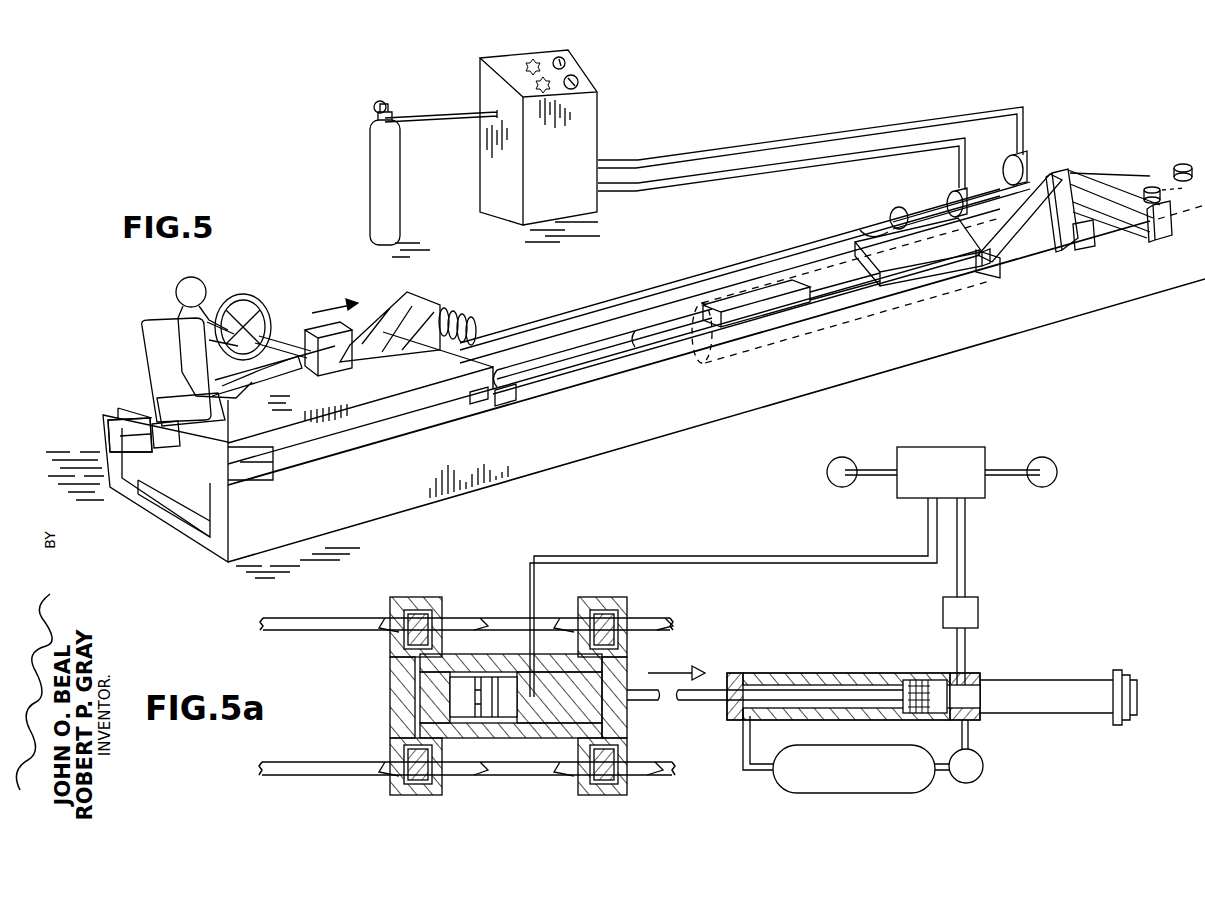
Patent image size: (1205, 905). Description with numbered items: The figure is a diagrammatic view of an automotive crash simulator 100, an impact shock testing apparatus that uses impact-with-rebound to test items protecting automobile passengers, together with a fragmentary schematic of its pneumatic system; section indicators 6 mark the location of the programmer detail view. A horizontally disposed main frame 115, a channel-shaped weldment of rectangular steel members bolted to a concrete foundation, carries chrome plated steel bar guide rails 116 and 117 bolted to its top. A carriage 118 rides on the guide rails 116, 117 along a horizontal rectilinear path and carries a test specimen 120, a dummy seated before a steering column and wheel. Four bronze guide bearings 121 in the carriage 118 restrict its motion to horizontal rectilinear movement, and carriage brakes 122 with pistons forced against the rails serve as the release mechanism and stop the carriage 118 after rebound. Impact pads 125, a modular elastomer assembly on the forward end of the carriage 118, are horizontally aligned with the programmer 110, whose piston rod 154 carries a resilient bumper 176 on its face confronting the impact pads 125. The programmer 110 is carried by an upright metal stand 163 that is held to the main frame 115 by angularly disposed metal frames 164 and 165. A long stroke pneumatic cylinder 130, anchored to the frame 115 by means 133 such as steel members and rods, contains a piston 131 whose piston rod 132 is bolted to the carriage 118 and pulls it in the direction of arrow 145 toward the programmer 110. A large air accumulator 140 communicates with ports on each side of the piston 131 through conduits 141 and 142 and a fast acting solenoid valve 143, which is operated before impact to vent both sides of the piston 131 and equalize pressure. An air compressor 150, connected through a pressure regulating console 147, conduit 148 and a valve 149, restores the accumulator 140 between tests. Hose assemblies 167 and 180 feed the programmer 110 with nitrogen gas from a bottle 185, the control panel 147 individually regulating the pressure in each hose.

In FIG. 5, the end plate / section line 6 is at (878, 220).
In FIG. 5, the automotive crash simulator 100 is at (1060, 325).
In FIG. 5, the programmer 110 is at (922, 252).
In FIG. 5, the main frame 115 is at (250, 520).
In FIG. 5A, the main frame 115 is at (1134, 686).
In FIG. 5, the guide rail 116 is at (560, 380).
In FIG. 5A, the guide rail 116 is at (672, 772).
In FIG. 5, the guide rail 117 is at (636, 289).
In FIG. 5A, the guide rail 117 is at (667, 629).
In FIG. 5, the carriage 118 is at (383, 412).
In FIG. 5A, the carriage 118 is at (390, 694).
In FIG. 5, the test specimen 120 is at (140, 336).
In FIG. 5, the guide bearings 121 is at (119, 416).
In FIG. 5A, the guide bearings 121 is at (443, 612).
In FIG. 5, the carriage brakes 122 is at (165, 447).
In FIG. 5A, the carriage brakes 122 is at (406, 620).
In FIG. 5, the impact pads 125 is at (460, 308).
In FIG. 5, the pneumatic cylinder 130 is at (786, 314).
In FIG. 5A, the pneumatic cylinder 130 is at (732, 676).
In FIG. 5A, the piston 131 is at (934, 680).
In FIG. 5, the piston rod 132 is at (638, 360).
In FIG. 5A, the piston rod 132 is at (690, 700).
In FIG. 5, the anchoring means 133 is at (856, 296).
In FIG. 5A, the anchoring means 133 is at (1061, 680).
In FIG. 5, the air accumulator 140 is at (708, 366).
In FIG. 5A, the air accumulator 140 is at (775, 784).
In FIG. 5A, the conduit 141 is at (743, 744).
In FIG. 5A, the conduit 142 is at (974, 736).
In FIG. 5, the fast acting solenoid valve 143 is at (1155, 185).
In FIG. 5A, the fast acting solenoid valve 143 is at (982, 774).
In FIG. 5, the arrow 145 is at (329, 296).
In FIG. 5A, the arrow 145 is at (676, 663).
In FIG. 5, the pressure regulating console 147 is at (480, 178).
In FIG. 5A, the pressure regulating console 147 is at (959, 448).
In FIG. 5A, the conduit 148 is at (969, 588).
In FIG. 5, the valve 149 is at (1187, 163).
In FIG. 5A, the valve 149 is at (975, 622).
In FIG. 5A, the air compressor 150 is at (1062, 448).
In FIG. 5, the piston rod 154 is at (922, 209).
In FIG. 5, the upright metal stand 163 is at (1096, 248).
In FIG. 5, the angularly disposed metal frame 164 is at (1008, 264).
In FIG. 5, the angularly disposed metal frame 165 is at (1169, 253).
In FIG. 5, the hose assembly 167 is at (796, 147).
In FIG. 5, the resilient bumper 176 is at (928, 209).
In FIG. 5, the hose assembly 180 is at (795, 178).
In FIG. 5, the nitrogen bottle 185 is at (370, 176).
In FIG. 5A, the nitrogen bottle 185 is at (852, 486).